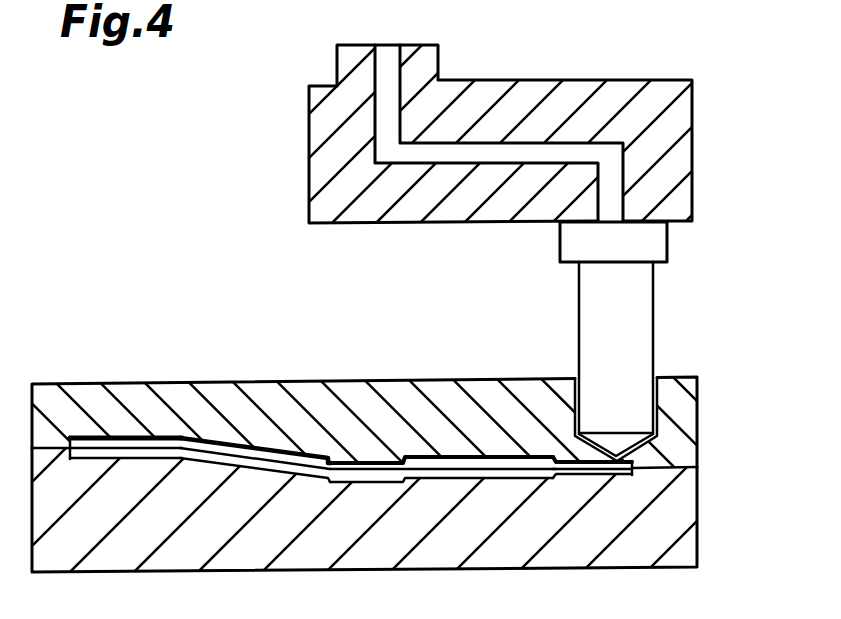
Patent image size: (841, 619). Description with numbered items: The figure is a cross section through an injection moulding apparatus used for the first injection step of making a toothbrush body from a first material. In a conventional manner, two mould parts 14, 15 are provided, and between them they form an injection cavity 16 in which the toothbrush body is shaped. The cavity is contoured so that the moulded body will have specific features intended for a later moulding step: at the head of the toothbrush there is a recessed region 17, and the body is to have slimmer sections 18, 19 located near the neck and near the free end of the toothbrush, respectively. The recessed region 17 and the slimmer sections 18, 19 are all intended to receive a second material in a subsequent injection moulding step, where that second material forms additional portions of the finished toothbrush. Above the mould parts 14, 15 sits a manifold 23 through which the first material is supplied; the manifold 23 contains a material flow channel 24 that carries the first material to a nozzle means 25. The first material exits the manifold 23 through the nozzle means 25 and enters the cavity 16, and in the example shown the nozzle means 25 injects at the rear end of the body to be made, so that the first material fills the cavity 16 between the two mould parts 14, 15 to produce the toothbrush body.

The mould part 14 is at (130, 395).
The mould part 15 is at (188, 478).
The injection cavity 16 is at (252, 455).
The recessed region 17 is at (82, 437).
The slimmer section 18 is at (362, 463).
The slimmer section 19 is at (558, 455).
The manifold 23 is at (322, 194).
The material flow channel 24 is at (390, 89).
The nozzle means 25 is at (590, 281).